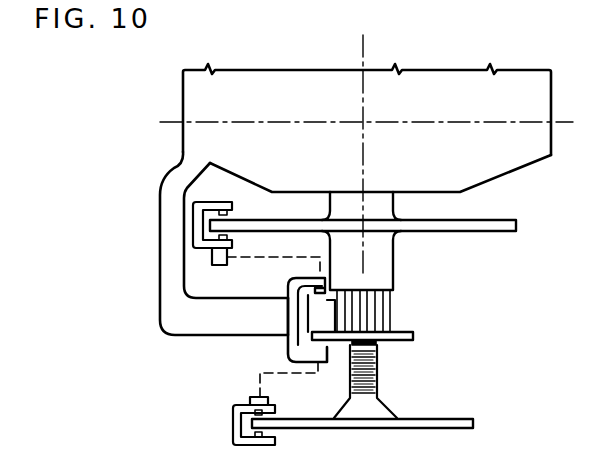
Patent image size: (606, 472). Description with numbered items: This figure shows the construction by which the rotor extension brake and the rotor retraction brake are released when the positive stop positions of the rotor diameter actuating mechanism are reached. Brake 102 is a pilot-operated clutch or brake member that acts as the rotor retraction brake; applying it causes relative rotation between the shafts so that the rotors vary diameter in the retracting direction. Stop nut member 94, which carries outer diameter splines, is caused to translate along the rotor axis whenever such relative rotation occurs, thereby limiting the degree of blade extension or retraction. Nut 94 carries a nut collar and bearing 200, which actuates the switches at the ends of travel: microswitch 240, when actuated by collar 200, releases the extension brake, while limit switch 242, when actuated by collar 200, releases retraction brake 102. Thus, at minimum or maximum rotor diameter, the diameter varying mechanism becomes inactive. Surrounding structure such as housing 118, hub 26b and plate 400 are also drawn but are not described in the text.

The housing 118 is at (228, 122).
The hub 26b is at (466, 161).
The brake 102 is at (488, 220).
The nut member 94 is at (392, 303).
The nut collar and bearing 200 is at (410, 330).
The limit switch 242 is at (290, 281).
The microswitch 240 is at (293, 343).
The base plate 400 is at (363, 423).